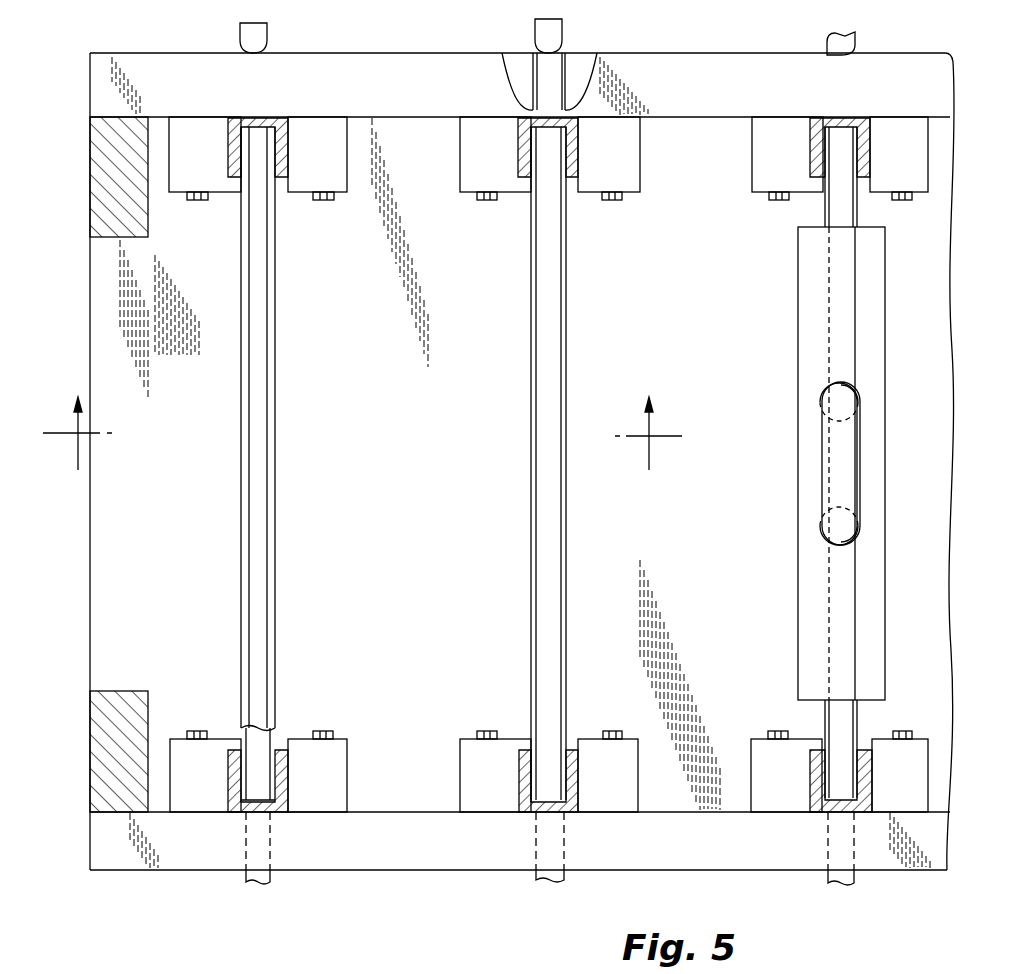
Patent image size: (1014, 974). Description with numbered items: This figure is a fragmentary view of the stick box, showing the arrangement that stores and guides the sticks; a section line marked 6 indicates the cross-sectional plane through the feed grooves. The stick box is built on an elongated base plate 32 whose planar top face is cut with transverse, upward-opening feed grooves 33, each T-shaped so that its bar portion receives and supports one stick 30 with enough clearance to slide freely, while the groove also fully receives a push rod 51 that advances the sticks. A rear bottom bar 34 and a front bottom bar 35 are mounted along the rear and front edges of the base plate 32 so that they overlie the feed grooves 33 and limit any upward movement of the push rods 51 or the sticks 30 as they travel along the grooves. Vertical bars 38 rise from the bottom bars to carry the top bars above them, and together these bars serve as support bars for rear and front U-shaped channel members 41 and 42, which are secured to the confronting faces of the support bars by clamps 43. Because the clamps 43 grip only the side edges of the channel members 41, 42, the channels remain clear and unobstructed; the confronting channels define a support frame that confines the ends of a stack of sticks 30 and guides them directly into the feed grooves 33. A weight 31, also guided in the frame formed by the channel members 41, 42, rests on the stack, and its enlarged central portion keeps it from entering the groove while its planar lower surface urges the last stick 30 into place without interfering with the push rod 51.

The stick 30 is at (262, 40).
The weight 31 is at (815, 313).
The base plate 32 is at (107, 318).
The feed groove 33 is at (266, 300).
The rear bottom bar 34 is at (455, 842).
The front bottom bar 35 is at (448, 33).
The vertical bar 38 is at (105, 160).
The rear U-shaped channel member 41 is at (228, 752).
The front U-shaped channel member 42 is at (280, 121).
The clamp 43 is at (333, 177).
The push rod 51 is at (548, 303).
The section line 6- 6 is at (362, 433).